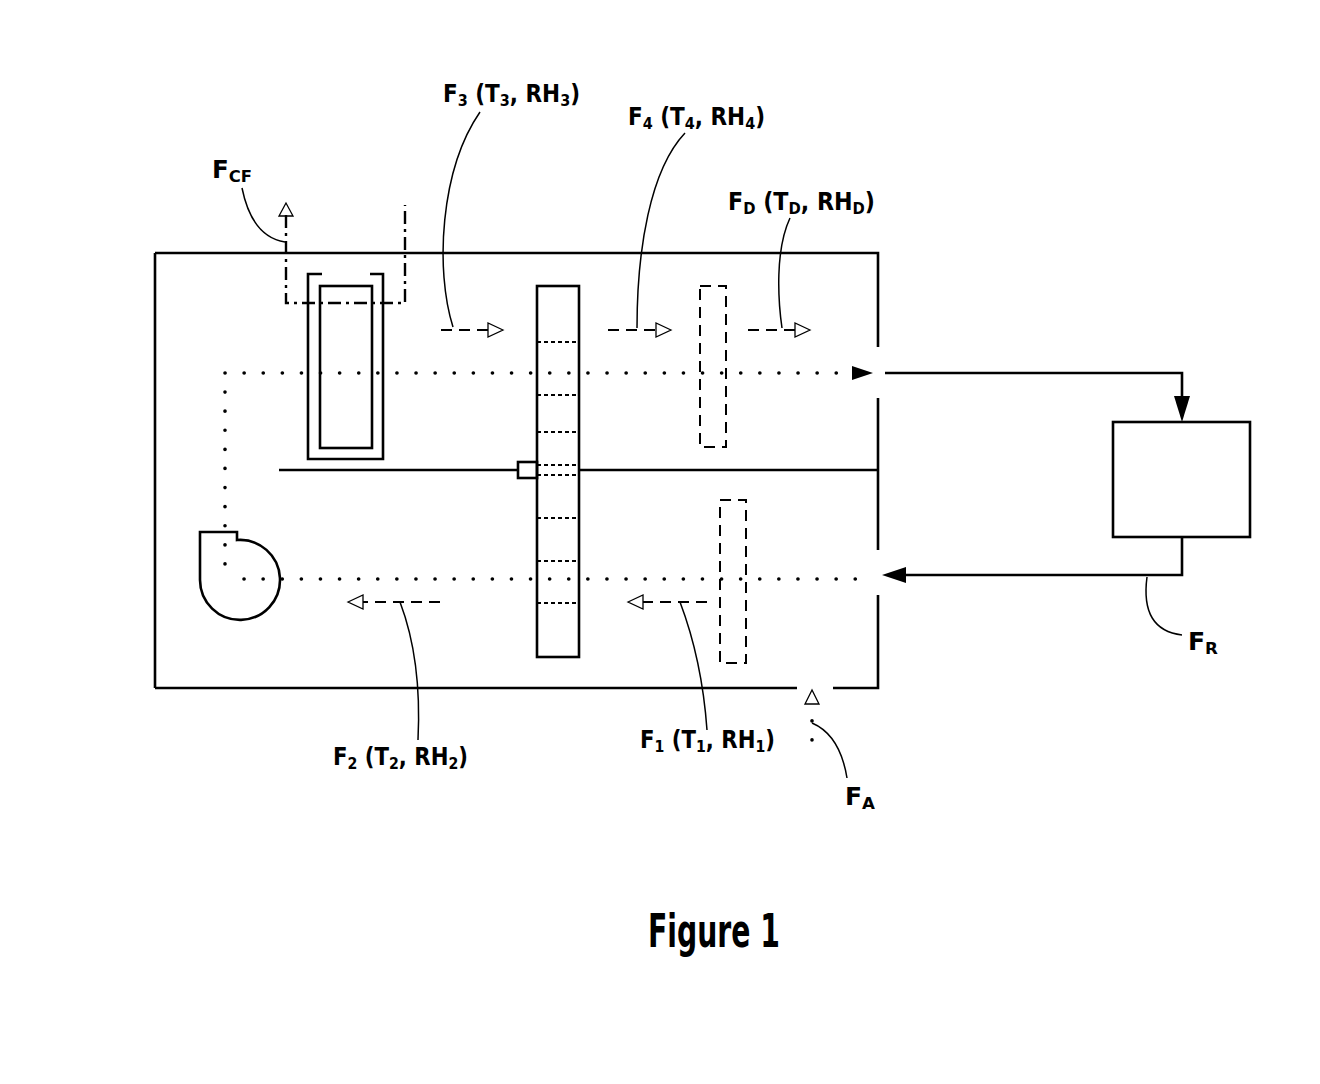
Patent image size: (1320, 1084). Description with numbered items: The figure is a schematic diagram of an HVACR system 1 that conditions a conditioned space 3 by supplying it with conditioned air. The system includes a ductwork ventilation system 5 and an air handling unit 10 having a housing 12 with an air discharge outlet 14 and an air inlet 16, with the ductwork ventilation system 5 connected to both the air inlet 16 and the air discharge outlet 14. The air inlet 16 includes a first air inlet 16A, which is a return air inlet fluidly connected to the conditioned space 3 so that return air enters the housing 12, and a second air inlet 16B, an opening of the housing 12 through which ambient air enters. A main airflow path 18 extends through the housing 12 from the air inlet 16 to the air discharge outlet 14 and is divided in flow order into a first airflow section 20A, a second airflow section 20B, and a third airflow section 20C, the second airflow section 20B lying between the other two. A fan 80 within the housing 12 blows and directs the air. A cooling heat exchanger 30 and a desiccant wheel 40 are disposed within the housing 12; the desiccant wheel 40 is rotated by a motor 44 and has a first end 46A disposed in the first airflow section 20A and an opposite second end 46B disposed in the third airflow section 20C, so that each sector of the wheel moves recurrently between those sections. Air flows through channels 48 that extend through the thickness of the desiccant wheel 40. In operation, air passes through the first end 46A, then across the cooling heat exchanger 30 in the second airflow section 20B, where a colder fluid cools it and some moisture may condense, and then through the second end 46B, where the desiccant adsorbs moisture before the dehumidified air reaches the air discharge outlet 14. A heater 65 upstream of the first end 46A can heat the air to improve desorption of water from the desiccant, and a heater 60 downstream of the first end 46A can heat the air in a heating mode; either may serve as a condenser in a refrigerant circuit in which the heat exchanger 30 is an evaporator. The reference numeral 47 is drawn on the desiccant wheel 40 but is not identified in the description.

The HVACR system 1 is at (240, 102).
The conditioned space 3 is at (1250, 477).
The ductwork ventilation system 5 is at (1037, 573).
The air handling unit 10 is at (884, 243).
The housing 12 is at (153, 320).
The air discharge outlet 14 is at (882, 362).
The air inlet 16 is at (882, 592).
The first air inlet 16A is at (882, 586).
The second air inlet 16B is at (825, 688).
The main airflow path 18 is at (225, 424).
The first airflow section 20A is at (570, 676).
The second airflow section 20B is at (358, 263).
The third airflow section 20C is at (600, 273).
The cooling heat exchanger 30 is at (348, 282).
The desiccant wheel 40 is at (528, 277).
The motor 44 is at (530, 479).
The first end 46A is at (558, 636).
The second end 46B is at (563, 305).
The wheel partition 47 is at (558, 476).
The channels 48 is at (550, 395).
The heater 60 is at (700, 298).
The heater 65 is at (747, 603).
The fan 80 is at (205, 602).